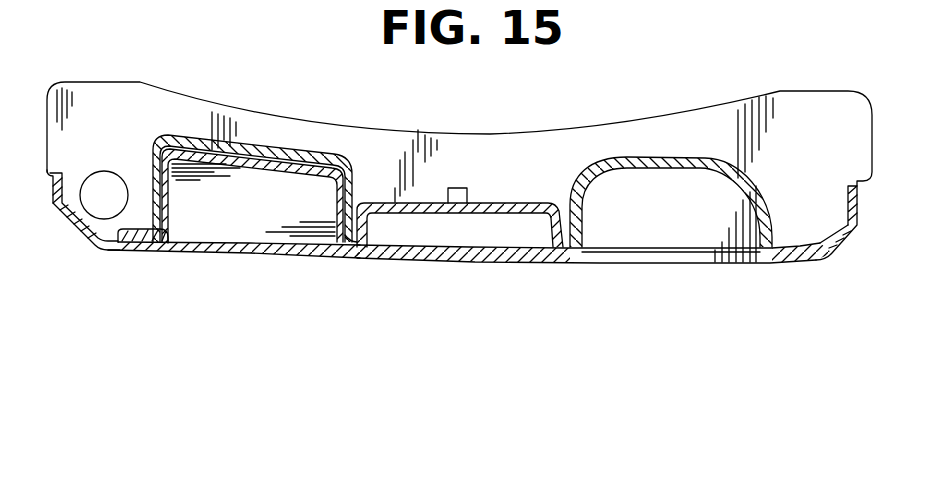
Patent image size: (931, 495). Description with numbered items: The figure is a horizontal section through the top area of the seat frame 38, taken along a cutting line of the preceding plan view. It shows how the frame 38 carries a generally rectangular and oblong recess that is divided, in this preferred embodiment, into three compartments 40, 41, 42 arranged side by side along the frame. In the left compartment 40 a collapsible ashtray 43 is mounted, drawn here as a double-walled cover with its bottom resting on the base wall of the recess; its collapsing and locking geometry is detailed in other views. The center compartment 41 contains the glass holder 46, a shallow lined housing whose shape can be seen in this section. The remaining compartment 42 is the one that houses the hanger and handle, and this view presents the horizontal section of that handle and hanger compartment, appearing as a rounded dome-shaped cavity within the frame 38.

The frame 38 is at (110, 247).
The compartment 40 is at (288, 148).
The center compartment 41 is at (425, 212).
The compartment 42 is at (667, 165).
The collapsible ashtray 43 is at (245, 255).
The glass holder 46 is at (476, 263).